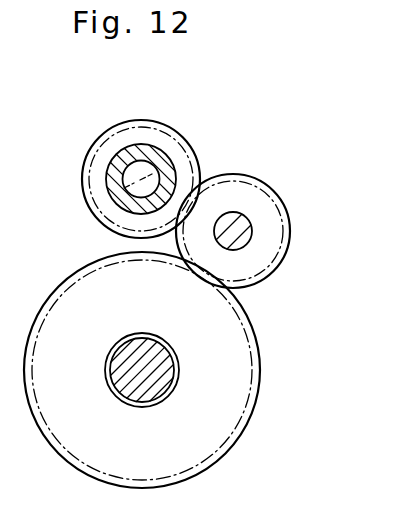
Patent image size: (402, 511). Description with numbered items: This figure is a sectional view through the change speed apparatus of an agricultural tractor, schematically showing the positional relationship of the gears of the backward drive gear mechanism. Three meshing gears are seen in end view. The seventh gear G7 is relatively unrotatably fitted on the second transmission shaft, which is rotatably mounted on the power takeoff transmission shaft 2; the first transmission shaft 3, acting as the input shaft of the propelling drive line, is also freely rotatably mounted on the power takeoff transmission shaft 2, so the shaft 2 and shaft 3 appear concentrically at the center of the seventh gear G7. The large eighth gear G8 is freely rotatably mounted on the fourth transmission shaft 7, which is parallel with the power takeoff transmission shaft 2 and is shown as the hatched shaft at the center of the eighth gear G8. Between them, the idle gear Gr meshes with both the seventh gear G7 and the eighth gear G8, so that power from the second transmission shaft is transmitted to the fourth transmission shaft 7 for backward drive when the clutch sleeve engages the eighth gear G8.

The seventh gear G7 is at (163, 125).
The idle gear Gr is at (290, 222).
The eighth gear G8 is at (257, 391).
The power takeoff transmission shaft 2 is at (153, 172).
The first transmission shaft 3 is at (115, 192).
The fourth transmission shaft 7 is at (157, 387).